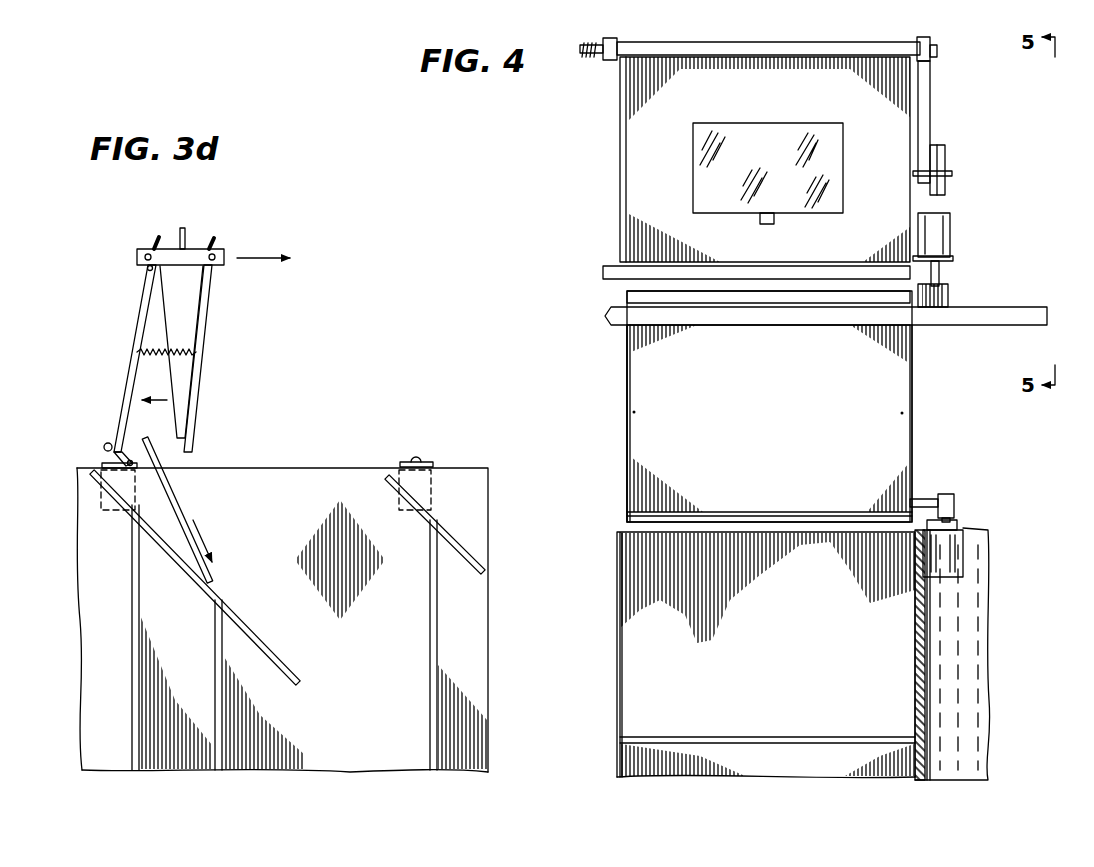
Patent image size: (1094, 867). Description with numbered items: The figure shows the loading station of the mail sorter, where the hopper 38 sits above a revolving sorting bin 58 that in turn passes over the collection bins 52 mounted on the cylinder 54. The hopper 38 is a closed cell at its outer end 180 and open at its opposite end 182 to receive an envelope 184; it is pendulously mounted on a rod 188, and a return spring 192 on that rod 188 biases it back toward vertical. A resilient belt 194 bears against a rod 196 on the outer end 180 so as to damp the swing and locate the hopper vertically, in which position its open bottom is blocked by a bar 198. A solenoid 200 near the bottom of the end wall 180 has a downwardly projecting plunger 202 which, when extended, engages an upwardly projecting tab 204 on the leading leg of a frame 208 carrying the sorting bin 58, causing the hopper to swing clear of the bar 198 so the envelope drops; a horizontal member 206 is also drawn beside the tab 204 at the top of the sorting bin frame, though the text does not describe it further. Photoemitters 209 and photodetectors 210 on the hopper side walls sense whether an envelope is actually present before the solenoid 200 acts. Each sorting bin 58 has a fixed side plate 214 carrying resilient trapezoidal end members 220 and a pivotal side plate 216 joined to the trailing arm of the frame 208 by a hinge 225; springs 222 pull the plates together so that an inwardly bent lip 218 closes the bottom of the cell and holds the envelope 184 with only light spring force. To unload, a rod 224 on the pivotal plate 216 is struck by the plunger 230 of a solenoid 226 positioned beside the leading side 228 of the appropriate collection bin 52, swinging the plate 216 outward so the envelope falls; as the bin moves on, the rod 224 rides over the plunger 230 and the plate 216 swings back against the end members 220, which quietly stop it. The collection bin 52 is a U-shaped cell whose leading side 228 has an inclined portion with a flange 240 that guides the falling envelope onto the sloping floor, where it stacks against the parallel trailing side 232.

In FIG. 4, the hopper 38 is at (591, 125).
In FIG. 4, the collection bin 52 is at (610, 627).
In FIG. 3d, the cylinder 54 is at (285, 468).
In FIG. 4, the cylinder 54 is at (923, 715).
In FIG. 3d, the sorting bin 58 is at (140, 238).
In FIG. 4, the sorting bin 58 is at (917, 414).
In FIG. 4, the outer end 180 is at (918, 116).
In FIG. 4, the opposite end 182 is at (621, 198).
In FIG. 3d, the envelope 184 is at (176, 486).
In FIG. 4, the rod 188 is at (823, 55).
In FIG. 4, the return spring 192 is at (598, 60).
In FIG. 4, the belt 194 is at (946, 158).
In FIG. 4, the rod 196 is at (953, 176).
In FIG. 4, the bar 198 is at (604, 272).
In FIG. 4, the solenoid 200 is at (953, 230).
In FIG. 4, the plunger 202 is at (943, 272).
In FIG. 3d, the tab 204 is at (185, 231).
In FIG. 4, the tab 204 is at (948, 290).
In FIG. 4, the carrier bar 206 is at (1022, 313).
In FIG. 4, the frame 208 is at (604, 325).
In FIG. 4, the photoemitter 209 is at (759, 222).
In FIG. 4, the photodetector 210 is at (777, 217).
In FIG. 3d, the fixed side plate 214 is at (200, 400).
In FIG. 4, the fixed side plate 214 is at (906, 377).
In FIG. 3d, the pivotal side plate 216 is at (141, 333).
In FIG. 4, the lip 218 is at (627, 507).
In FIG. 3d, the end member 220 is at (196, 308).
In FIG. 3d, the spring 222 is at (190, 352).
In FIG. 3d, the rod 224 is at (108, 443).
In FIG. 4, the rod 224 is at (921, 498).
In FIG. 3d, the hinge 225 is at (148, 269).
In FIG. 3d, the solenoid 226 is at (102, 462).
In FIG. 4, the solenoid 226 is at (967, 531).
In FIG. 3d, the leading side 228 is at (214, 642).
In FIG. 4, the leading side 228 is at (620, 752).
In FIG. 3d, the plunger 230 is at (122, 458).
In FIG. 4, the plunger 230 is at (948, 494).
In FIG. 3d, the trailing side 232 is at (131, 618).
In FIG. 3d, the flange 240 is at (247, 610).
In FIG. 4, the flange 240 is at (634, 680).